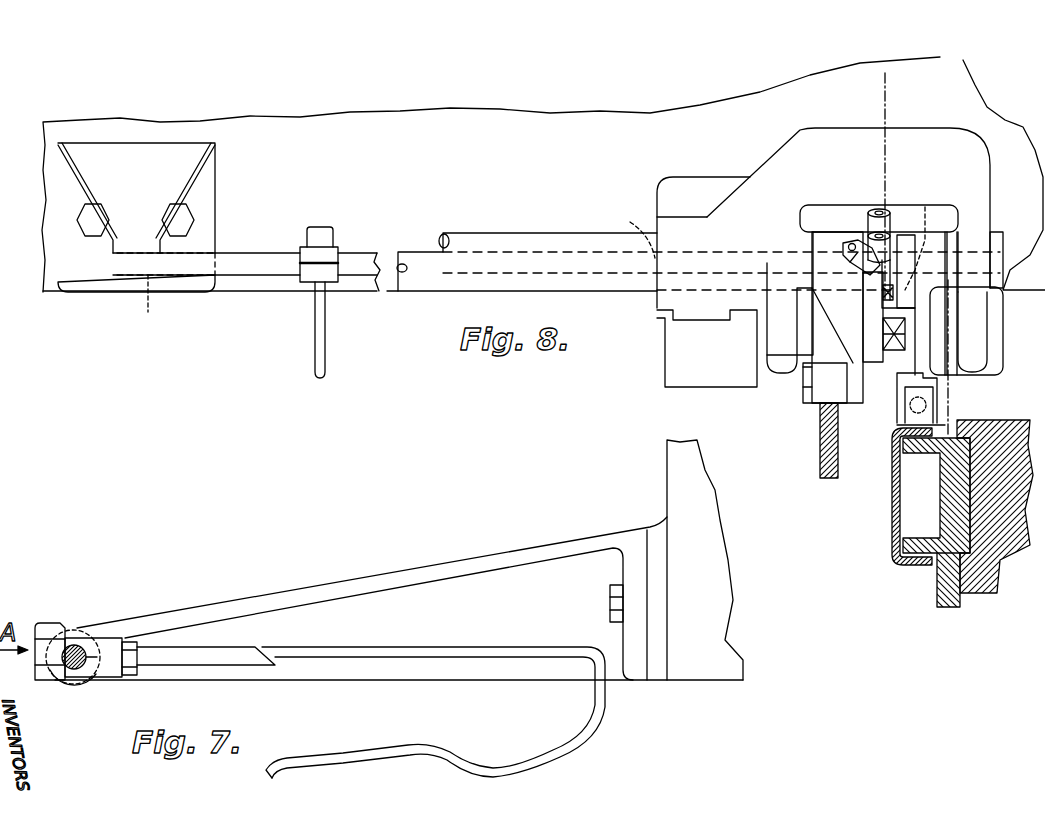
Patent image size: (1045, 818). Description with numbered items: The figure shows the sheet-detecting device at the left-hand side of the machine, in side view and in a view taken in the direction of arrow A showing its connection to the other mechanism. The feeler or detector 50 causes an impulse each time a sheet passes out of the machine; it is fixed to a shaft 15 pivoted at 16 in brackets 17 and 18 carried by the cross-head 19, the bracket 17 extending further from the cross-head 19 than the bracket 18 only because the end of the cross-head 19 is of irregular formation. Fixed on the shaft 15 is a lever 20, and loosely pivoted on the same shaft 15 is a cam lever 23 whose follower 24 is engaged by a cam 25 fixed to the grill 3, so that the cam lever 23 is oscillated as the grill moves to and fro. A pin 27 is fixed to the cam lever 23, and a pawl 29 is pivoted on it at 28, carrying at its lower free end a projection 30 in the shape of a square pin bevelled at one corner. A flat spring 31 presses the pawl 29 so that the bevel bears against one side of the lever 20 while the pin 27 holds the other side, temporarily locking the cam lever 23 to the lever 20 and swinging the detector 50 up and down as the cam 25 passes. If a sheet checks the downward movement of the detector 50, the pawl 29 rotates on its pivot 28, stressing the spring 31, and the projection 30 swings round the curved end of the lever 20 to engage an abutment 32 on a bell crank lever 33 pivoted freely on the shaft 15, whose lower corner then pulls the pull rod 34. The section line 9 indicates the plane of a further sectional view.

In FIG. 8, the grill 3 is at (893, 488).
In FIG. 8, the section line 9- 9 is at (887, 73).
In FIG. 8, the shaft 15 is at (243, 253).
In FIG. 7, the shaft 15 is at (82, 647).
In FIG. 8, the pivot 16 is at (398, 269).
In FIG. 7, the pivot 16 is at (67, 637).
In FIG. 8, the bracket 17 is at (193, 152).
In FIG. 7, the bracket 17 is at (305, 595).
In FIG. 8, the bracket 18 is at (803, 140).
In FIG. 8, the cross-head 19 is at (983, 118).
In FIG. 7, the cross-head 19 is at (667, 460).
In FIG. 8, the lever 20 is at (893, 262).
In FIG. 8, the cam lever 23 is at (853, 395).
In FIG. 8, the follower 24 is at (823, 383).
In FIG. 8, the cam 25 is at (820, 443).
In FIG. 8, the pin 27 is at (930, 215).
In FIG. 8, the pivot 28 is at (907, 310).
In FIG. 8, the pawl 29 is at (873, 357).
In FIG. 8, the projection 30 is at (933, 353).
In FIG. 8, the flat spring 31 is at (858, 240).
In FIG. 8, the abutment 32 is at (900, 283).
In FIG. 8, the bell crank lever 33 is at (923, 330).
In FIG. 8, the pull rod 34 is at (927, 400).
In FIG. 8, the detector 50 is at (316, 340).
In FIG. 7, the detector 50 is at (375, 762).